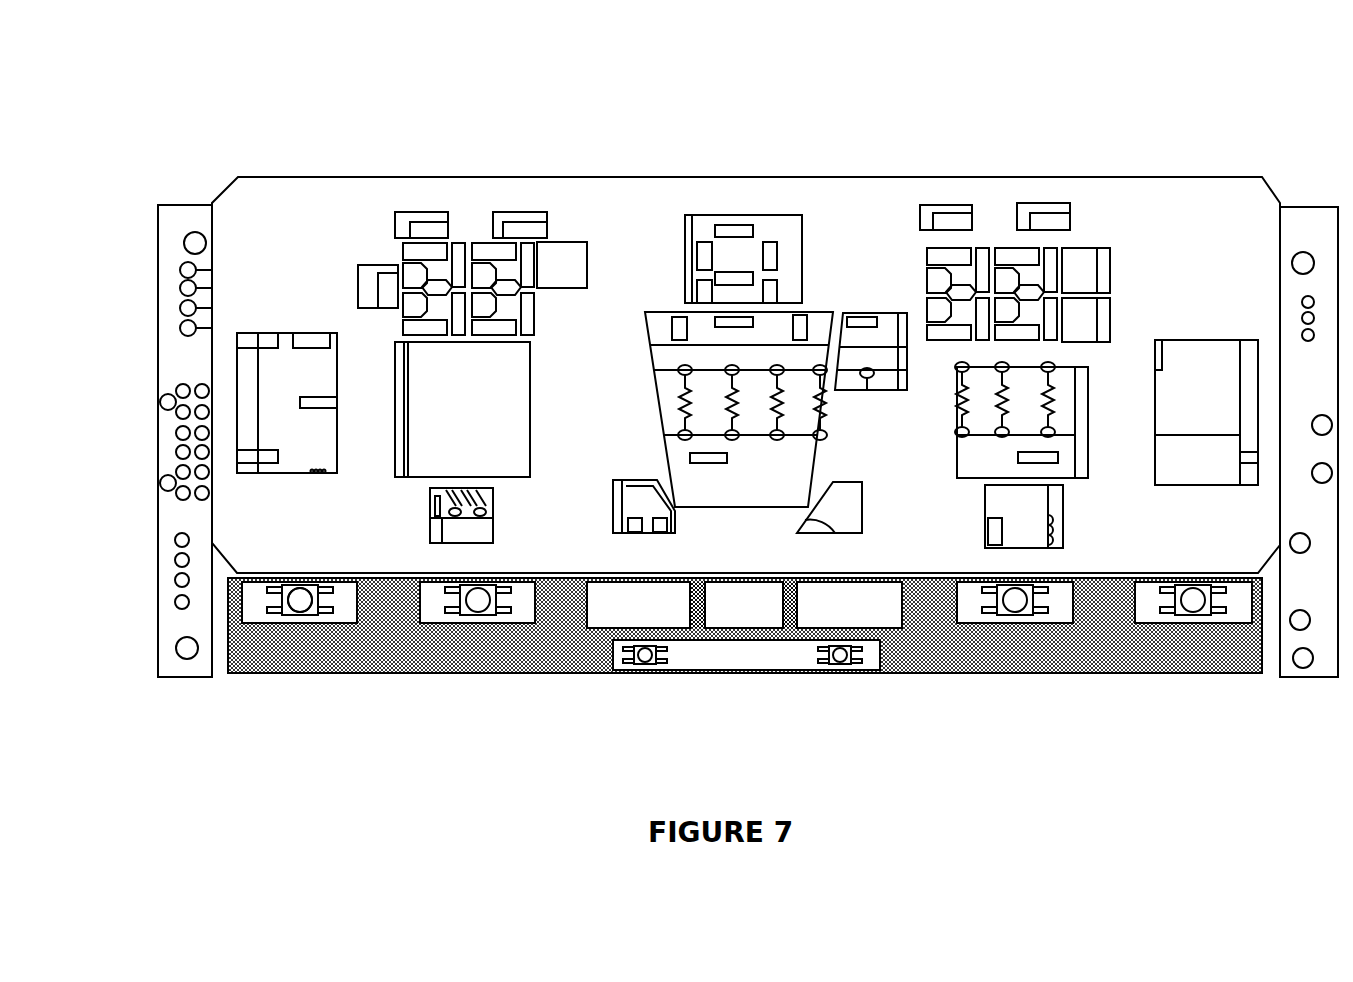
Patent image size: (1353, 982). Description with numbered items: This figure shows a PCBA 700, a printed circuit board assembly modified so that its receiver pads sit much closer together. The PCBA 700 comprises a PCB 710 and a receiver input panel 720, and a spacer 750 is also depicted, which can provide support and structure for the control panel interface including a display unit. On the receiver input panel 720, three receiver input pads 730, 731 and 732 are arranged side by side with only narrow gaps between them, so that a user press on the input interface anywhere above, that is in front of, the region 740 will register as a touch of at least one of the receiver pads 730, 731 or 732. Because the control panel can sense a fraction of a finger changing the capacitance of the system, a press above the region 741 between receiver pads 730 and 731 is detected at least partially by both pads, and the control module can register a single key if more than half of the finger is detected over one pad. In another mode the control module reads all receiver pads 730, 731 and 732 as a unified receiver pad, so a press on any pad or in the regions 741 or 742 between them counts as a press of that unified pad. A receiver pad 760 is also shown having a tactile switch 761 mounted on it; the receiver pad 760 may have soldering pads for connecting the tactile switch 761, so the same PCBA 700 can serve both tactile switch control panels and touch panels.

The PCBA 700 is at (502, 150).
The PCB 710 is at (173, 358).
The receiver input panel 720 is at (257, 637).
The receiver input pad 730 is at (603, 600).
The receiver input pad 731 is at (727, 610).
The receiver input pad 732 is at (877, 605).
The region 740 is at (915, 563).
The region between receiver pads 741 is at (697, 613).
The region between receiver pads 742 is at (793, 613).
The spacer 750 is at (308, 200).
The receiver pad 760 is at (427, 608).
The tactile switch 761 is at (483, 600).